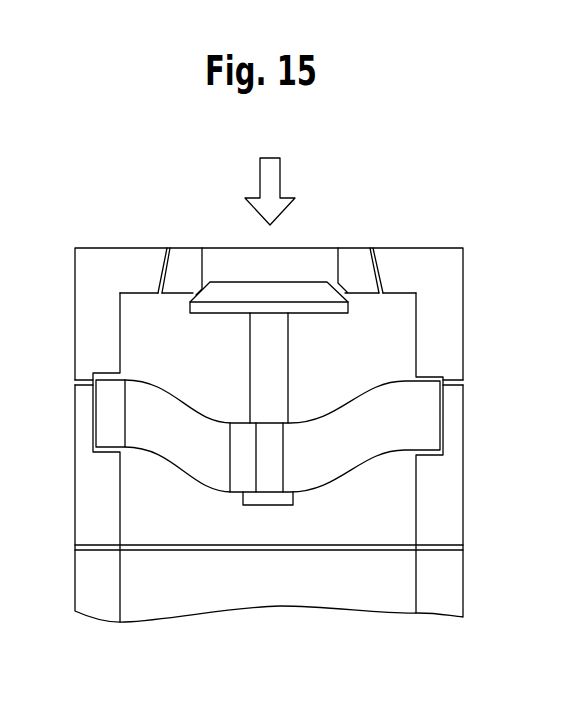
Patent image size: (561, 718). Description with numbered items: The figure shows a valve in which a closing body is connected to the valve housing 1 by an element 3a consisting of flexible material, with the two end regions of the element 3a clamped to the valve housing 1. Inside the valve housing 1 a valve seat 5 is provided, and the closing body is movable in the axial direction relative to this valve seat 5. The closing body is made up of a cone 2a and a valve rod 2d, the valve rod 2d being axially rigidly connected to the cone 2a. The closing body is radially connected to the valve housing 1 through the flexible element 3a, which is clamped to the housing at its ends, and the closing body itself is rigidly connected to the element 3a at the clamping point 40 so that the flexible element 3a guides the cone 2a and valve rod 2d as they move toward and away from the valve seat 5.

The valve housing 1 is at (93, 282).
The valve seat 5 is at (187, 267).
The cone 2a is at (313, 295).
The valve rod 2d is at (268, 369).
The element consisting of flexible material 3a is at (398, 403).
The clamping point 40 is at (253, 498).